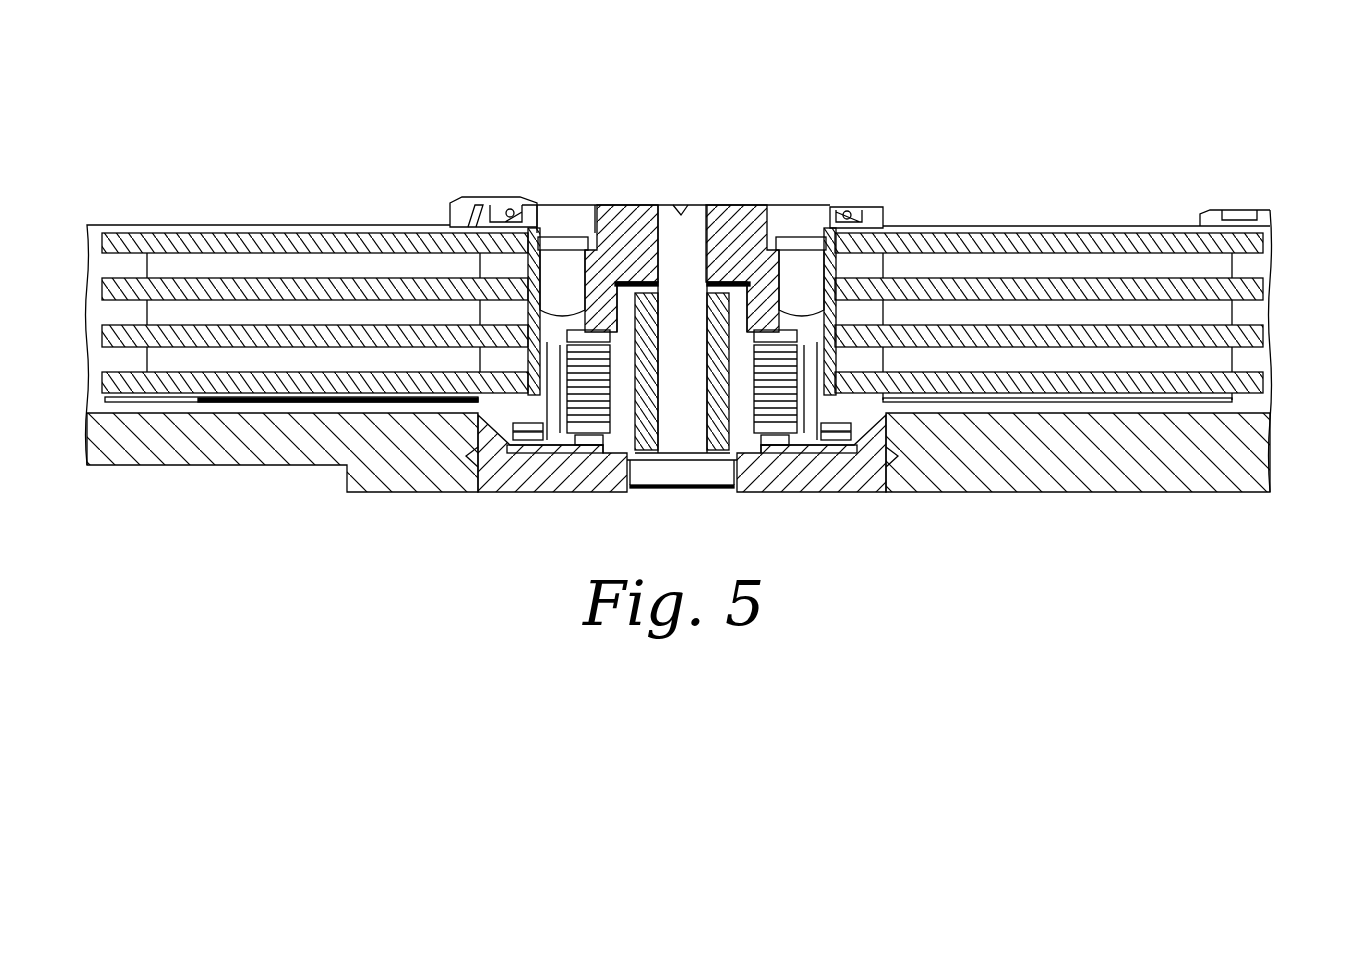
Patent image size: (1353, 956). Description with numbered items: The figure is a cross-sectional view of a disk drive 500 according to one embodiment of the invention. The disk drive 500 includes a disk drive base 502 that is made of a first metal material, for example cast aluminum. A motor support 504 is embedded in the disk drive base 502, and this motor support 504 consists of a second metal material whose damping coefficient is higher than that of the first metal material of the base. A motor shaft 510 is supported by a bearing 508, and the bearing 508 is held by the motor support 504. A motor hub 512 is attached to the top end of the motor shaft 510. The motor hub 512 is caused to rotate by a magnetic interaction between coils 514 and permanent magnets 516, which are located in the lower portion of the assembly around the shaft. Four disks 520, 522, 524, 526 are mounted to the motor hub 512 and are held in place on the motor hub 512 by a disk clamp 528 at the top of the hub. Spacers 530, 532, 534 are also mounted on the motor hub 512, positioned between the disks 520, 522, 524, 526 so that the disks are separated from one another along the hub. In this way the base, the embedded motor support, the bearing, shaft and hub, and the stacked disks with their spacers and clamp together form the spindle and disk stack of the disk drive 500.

The disk drive 500 is at (840, 99).
The disk drive base 502 is at (232, 455).
The motor support 504 is at (500, 482).
The bearing 508 is at (648, 432).
The motor shaft 510 is at (695, 218).
The motor hub 512 is at (630, 218).
The coils 514 is at (782, 423).
The permanent magnets 516 is at (562, 427).
The disk 520 is at (1257, 242).
The disk 522 is at (1257, 287).
The disk 524 is at (1257, 334).
The disk 526 is at (1257, 380).
The disk clamp 528 is at (493, 212).
The spacer 530 is at (870, 267).
The spacer 532 is at (870, 312).
The spacer 534 is at (870, 358).